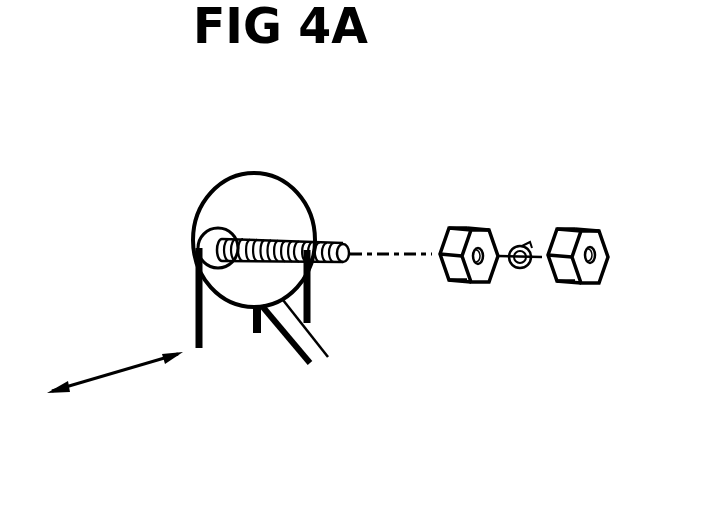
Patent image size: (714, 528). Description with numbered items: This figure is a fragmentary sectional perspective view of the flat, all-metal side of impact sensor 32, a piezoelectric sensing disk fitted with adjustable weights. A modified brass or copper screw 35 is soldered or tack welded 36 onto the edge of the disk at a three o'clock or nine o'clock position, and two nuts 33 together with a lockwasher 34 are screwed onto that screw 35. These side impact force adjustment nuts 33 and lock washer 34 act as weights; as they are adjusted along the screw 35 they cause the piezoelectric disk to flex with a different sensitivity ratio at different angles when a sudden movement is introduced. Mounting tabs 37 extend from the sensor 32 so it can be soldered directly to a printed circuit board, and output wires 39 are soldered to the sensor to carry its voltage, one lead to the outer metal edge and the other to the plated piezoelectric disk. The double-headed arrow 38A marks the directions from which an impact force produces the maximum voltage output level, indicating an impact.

The impact sensor 32 is at (259, 158).
The nuts 33 is at (557, 228).
The lockwasher 34 is at (517, 247).
The screw 35 is at (347, 259).
The solder or tack weld 36 is at (225, 228).
The mounting tabs 37 is at (255, 333).
The directions of maximum sensitivity 38A is at (115, 367).
The output wires 39 is at (310, 348).